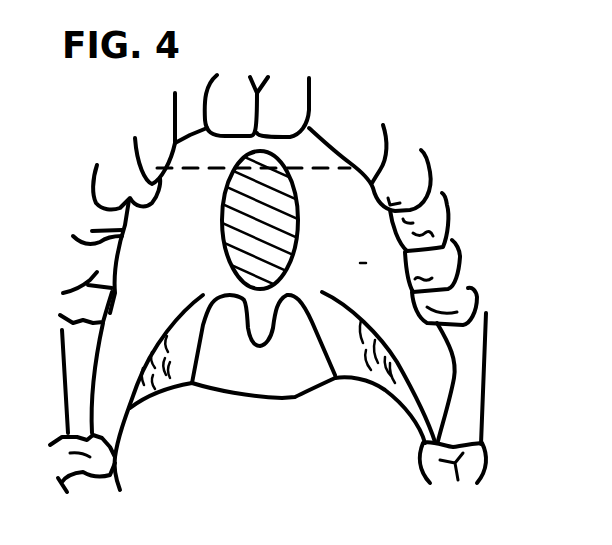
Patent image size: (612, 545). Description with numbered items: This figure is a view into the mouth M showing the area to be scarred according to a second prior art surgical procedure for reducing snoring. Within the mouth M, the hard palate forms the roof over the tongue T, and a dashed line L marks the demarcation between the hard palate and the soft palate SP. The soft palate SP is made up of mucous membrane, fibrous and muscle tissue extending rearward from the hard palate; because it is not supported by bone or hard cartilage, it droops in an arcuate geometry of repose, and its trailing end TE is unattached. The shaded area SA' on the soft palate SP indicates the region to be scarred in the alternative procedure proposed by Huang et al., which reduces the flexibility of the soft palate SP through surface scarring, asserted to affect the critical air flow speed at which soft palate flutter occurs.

The dashed line L is at (313, 170).
The shaded area SA' is at (283, 211).
The soft palate SP is at (359, 255).
The trailing end TE is at (217, 318).
The mouth M is at (303, 366).
The tongue T is at (295, 398).